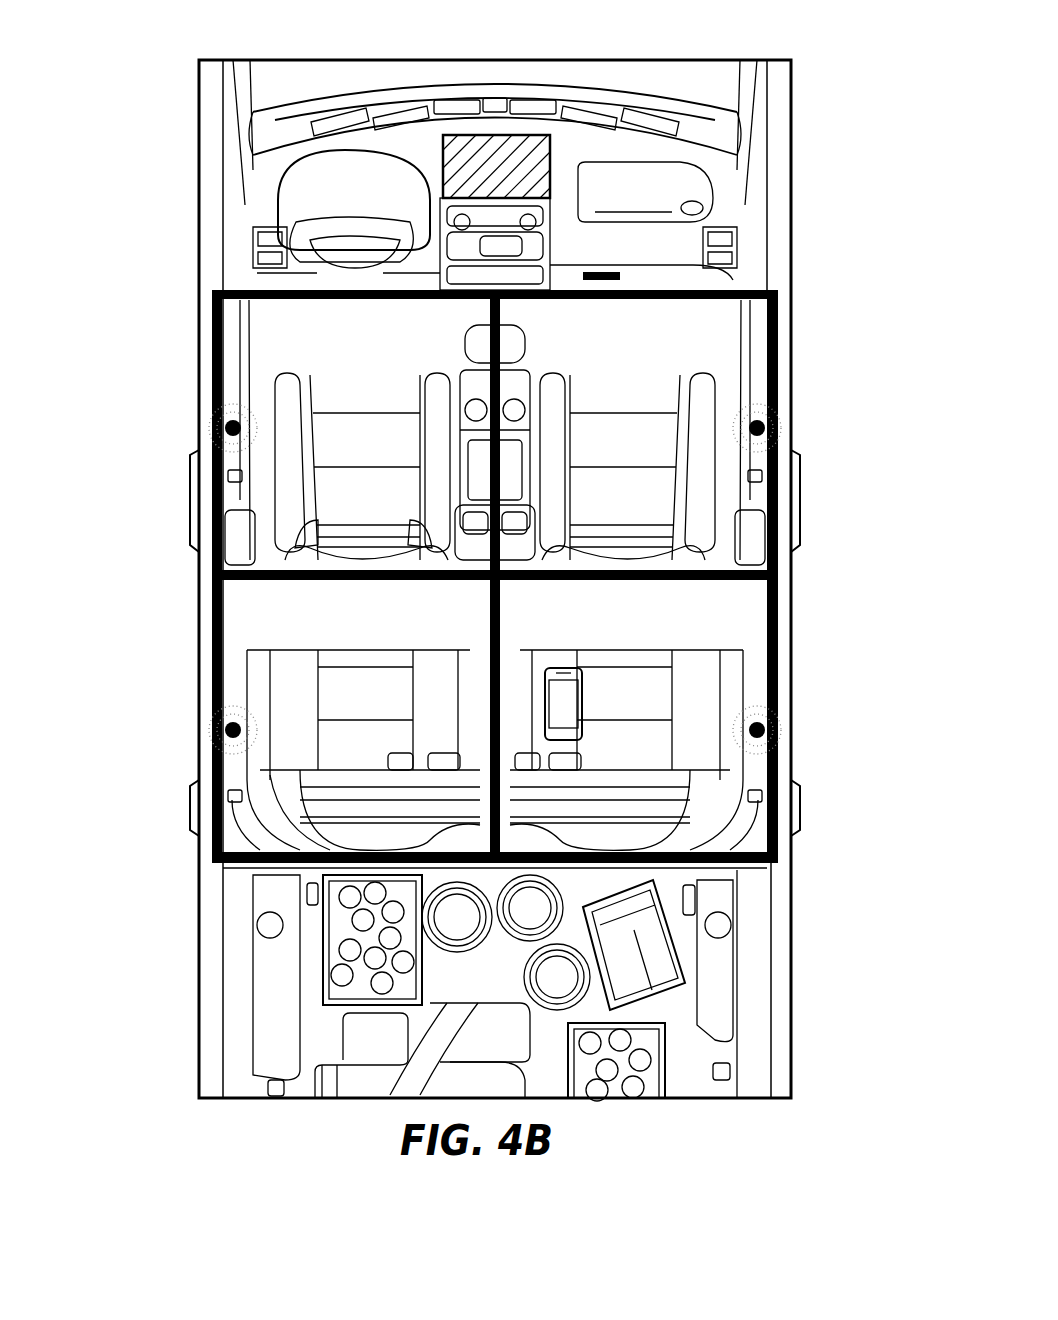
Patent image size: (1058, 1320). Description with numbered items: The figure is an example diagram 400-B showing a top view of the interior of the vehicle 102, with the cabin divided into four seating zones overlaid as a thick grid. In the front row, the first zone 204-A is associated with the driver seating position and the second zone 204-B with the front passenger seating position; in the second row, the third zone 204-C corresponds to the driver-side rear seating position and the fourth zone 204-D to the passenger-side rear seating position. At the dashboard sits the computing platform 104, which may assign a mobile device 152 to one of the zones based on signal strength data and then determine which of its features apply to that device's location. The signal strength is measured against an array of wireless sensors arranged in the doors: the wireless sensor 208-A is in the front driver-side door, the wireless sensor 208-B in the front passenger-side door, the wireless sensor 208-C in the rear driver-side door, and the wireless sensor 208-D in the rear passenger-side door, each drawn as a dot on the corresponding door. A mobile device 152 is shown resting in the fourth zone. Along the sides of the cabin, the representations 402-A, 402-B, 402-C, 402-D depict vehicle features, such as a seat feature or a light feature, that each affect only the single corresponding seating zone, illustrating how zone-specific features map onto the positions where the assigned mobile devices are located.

The example diagram 400-B is at (166, 40).
The vehicle 102 is at (199, 151).
The computing platform 104 is at (553, 165).
The first zone 204-A is at (212, 342).
The second zone 204-B is at (778, 342).
The third zone 204-C is at (212, 614).
The fourth zone 204-D is at (778, 614).
The wireless sensor 208-A is at (212, 398).
The wireless sensor 208-B is at (778, 398).
The wireless sensor 208-C is at (212, 700).
The wireless sensor 208-D is at (778, 700).
The representation 402-A is at (199, 548).
The representation 402-B is at (791, 548).
The representation 402-C is at (199, 832).
The representation 402-D is at (791, 832).
The mobile device 152 is at (568, 785).